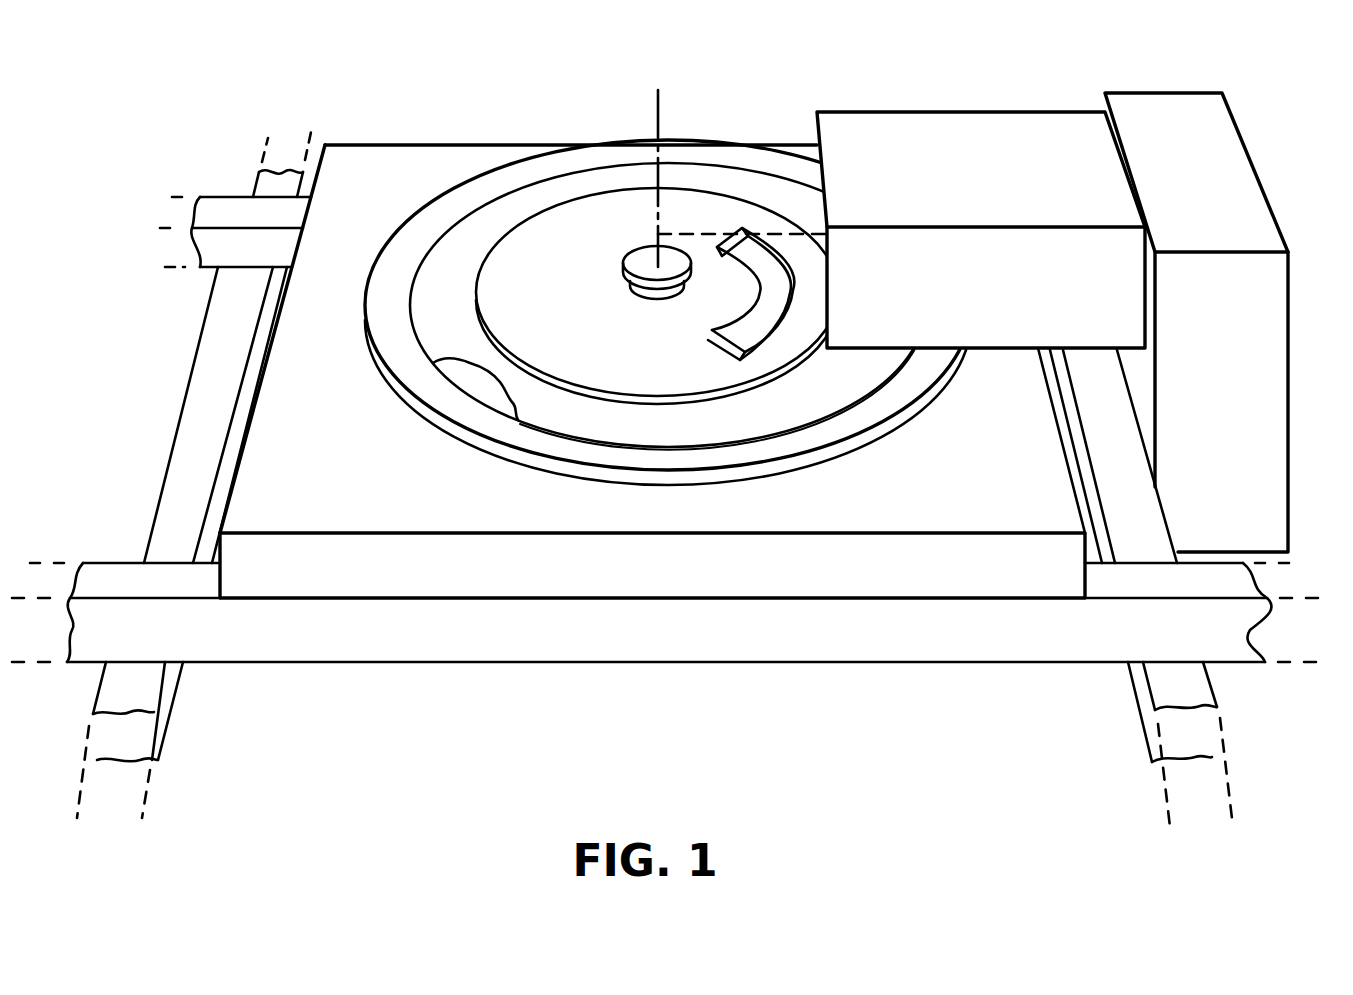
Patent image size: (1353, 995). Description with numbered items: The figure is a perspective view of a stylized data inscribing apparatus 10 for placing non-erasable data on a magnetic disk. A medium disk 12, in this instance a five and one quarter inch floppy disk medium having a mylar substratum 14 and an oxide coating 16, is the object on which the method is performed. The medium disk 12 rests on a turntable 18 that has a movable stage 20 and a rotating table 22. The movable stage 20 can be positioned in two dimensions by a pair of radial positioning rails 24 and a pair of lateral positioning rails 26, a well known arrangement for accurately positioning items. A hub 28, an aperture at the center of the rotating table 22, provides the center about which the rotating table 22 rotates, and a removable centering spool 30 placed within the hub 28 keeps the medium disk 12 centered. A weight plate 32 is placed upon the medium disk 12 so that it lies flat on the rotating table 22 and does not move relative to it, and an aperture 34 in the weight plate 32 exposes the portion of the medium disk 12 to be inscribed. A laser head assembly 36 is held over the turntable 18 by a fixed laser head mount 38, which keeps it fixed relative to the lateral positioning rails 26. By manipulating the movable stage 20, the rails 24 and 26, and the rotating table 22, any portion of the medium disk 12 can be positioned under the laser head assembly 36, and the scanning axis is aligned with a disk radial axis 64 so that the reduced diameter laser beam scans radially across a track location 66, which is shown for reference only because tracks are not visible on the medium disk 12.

The data inscribing apparatus 10 is at (160, 120).
The medium disk 12 is at (482, 212).
The mylar substratum 14 is at (460, 376).
The oxide coating 16 is at (425, 315).
The turntable 18 is at (460, 157).
The movable stage 20 is at (317, 459).
The rotating table 22 is at (410, 246).
The radial positioning rails 24 is at (217, 263).
The lateral positioning rails 26 is at (163, 726).
The hub 28 is at (648, 301).
The removable centering spool 30 is at (640, 261).
The weight plate 32 is at (527, 301).
The aperture 34 is at (736, 354).
The laser head assembly 36 is at (930, 181).
The fixed laser head mount 38 is at (1170, 181).
The disk radial axis 64 is at (704, 235).
The track location 66 is at (765, 300).